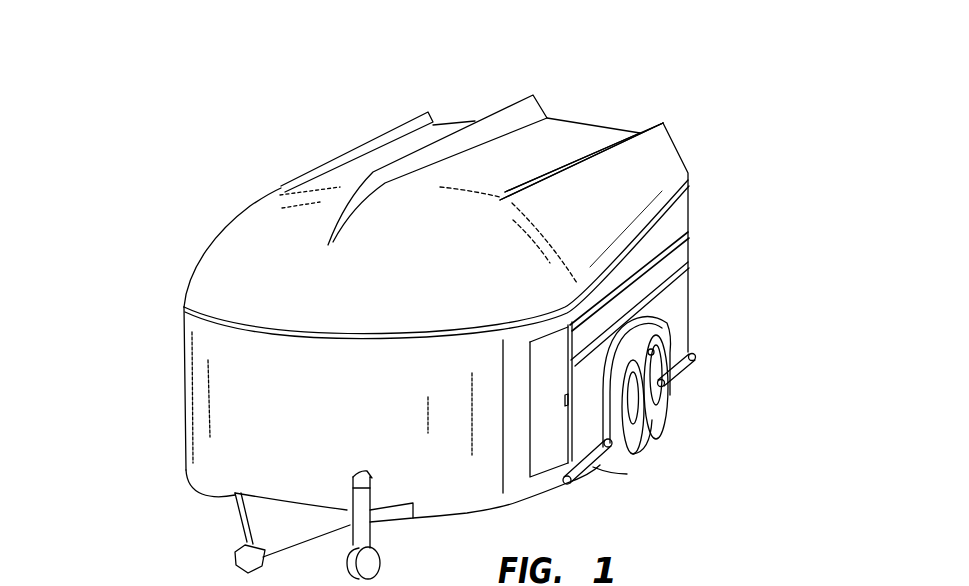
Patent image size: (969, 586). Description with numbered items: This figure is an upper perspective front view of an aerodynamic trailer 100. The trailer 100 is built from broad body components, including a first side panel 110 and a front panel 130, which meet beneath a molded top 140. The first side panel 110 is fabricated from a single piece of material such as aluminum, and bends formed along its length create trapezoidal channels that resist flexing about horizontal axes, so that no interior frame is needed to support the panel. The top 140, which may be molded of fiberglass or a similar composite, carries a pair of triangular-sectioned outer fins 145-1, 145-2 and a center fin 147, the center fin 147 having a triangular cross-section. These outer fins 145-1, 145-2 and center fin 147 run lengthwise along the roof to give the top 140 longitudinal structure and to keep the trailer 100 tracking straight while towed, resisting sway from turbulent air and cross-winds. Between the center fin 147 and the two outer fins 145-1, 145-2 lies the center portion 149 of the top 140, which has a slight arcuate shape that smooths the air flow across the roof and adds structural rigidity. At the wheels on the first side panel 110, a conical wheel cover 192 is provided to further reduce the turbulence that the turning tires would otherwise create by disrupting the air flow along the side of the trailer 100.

The aerodynamic trailer 100 is at (177, 187).
The first side panel 110 is at (673, 292).
The front panel 130 is at (296, 403).
The top 140 is at (487, 175).
The outer fin 145-1 is at (625, 156).
The outer fin 145-2 is at (406, 130).
The center fin 147 is at (498, 99).
The center portion 149 is at (280, 189).
The conical wheel cover 192 is at (692, 358).